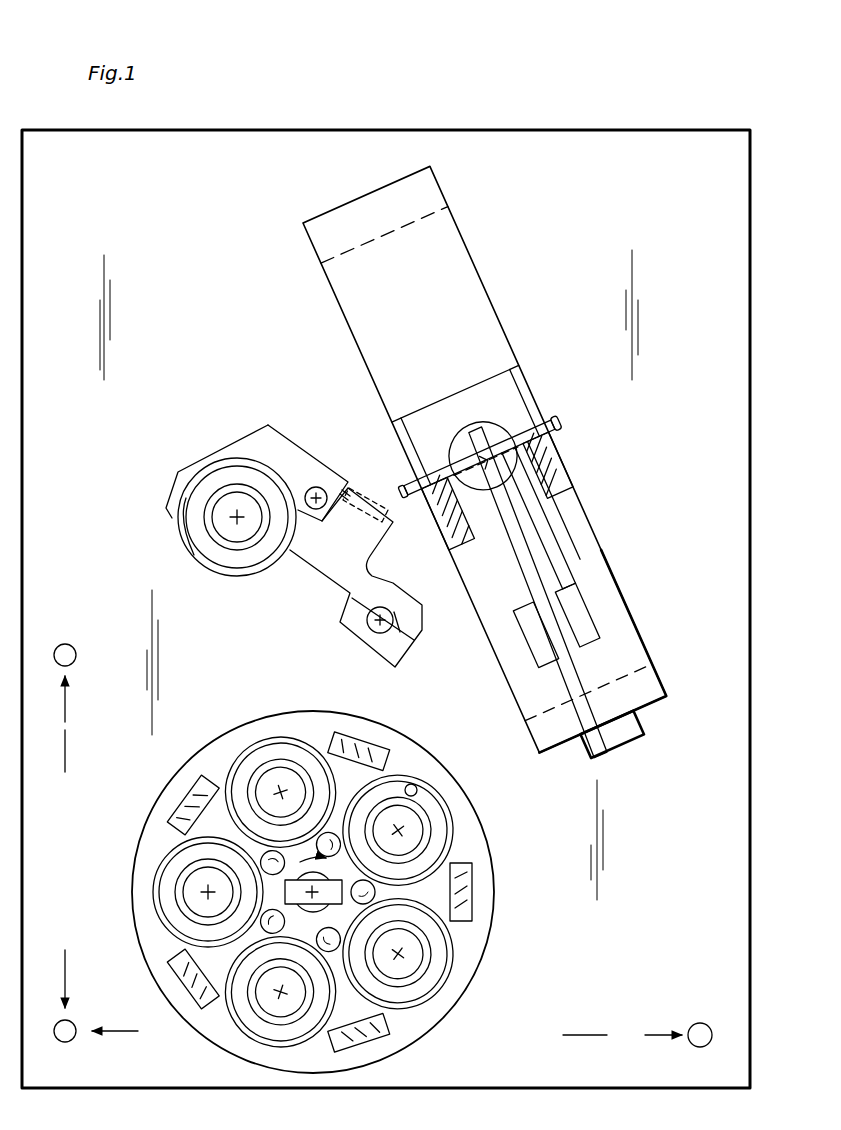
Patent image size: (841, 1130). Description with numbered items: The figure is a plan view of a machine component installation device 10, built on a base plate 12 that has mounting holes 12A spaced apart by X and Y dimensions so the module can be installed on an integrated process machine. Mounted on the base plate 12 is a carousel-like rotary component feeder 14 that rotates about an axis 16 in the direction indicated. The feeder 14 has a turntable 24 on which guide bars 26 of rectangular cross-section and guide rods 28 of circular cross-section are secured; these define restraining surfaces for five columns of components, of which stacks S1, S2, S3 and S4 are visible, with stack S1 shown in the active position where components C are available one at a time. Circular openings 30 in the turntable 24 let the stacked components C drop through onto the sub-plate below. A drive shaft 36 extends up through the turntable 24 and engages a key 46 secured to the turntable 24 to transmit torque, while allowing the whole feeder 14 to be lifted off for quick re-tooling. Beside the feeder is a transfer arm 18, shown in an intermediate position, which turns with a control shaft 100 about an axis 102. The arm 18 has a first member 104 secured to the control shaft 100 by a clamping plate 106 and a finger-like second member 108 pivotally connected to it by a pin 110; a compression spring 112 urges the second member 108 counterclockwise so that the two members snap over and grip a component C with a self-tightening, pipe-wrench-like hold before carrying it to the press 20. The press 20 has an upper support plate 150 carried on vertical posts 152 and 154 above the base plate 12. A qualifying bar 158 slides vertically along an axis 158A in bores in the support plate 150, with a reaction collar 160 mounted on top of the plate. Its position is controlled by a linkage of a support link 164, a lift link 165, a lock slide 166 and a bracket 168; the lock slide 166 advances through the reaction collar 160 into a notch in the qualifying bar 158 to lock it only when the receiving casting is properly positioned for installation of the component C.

The machine component installation device 10 is at (552, 116).
The base plate 12 is at (386, 609).
The mounting holes 12A is at (65, 644).
The rotary component feeder 14 is at (331, 889).
The axis 16 is at (300, 910).
The transfer arm 18 is at (291, 544).
The press 20 is at (501, 462).
The turntable 24 is at (313, 892).
The guide bars 26 is at (362, 745).
The guide rods 28 is at (340, 835).
The circular openings 30 is at (418, 786).
The drive shaft 36 is at (452, 948).
The key 46 is at (292, 892).
The control shaft 100 is at (386, 606).
The axis 102 is at (396, 620).
The first member 104 is at (356, 577).
The clamping plate 106 is at (368, 643).
The second member 108 is at (257, 500).
The pin 110 is at (320, 487).
The spring 112 is at (347, 483).
The upper support plate 150 is at (490, 296).
The vertical post 152 is at (412, 225).
The vertical post 154 is at (523, 708).
The qualifying bar 158 is at (470, 424).
The axis 158A is at (463, 460).
The reaction collar 160 is at (540, 424).
The support link 164 is at (528, 558).
The lift link 165 is at (583, 650).
The lock slide 166 is at (557, 578).
The bracket 168 is at (637, 735).
The stack S1 is at (268, 772).
The stack S2 is at (200, 892).
The stack S3 is at (272, 1010).
The stack S4 is at (415, 962).
The component C is at (186, 553).